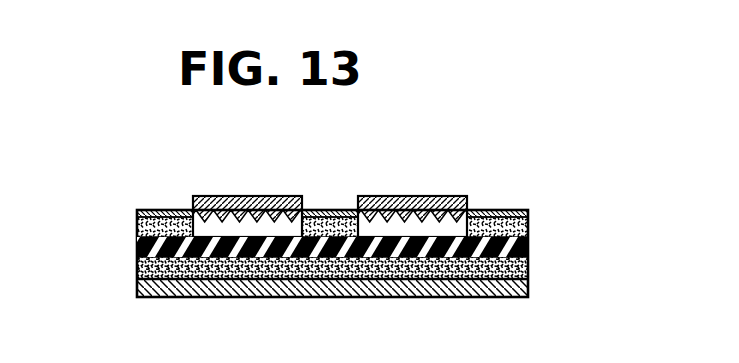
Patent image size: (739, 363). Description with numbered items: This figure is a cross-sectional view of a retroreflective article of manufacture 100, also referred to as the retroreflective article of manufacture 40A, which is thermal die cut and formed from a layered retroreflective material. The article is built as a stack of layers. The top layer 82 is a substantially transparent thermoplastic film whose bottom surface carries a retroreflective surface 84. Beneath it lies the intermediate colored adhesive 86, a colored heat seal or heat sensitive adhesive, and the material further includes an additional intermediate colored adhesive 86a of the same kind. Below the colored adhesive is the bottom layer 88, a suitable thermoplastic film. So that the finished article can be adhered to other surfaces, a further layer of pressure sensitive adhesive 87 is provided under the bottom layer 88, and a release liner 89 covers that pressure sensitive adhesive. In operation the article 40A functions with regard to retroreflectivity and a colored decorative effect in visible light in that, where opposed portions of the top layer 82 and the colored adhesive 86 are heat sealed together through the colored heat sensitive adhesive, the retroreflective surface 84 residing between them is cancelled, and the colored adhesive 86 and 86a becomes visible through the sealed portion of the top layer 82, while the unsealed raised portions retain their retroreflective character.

The top layer 82 is at (150, 210).
The retroreflective surface 84 is at (252, 220).
The intermediate colored adhesive 86 is at (137, 231).
The intermediate colored adhesive 86a is at (334, 211).
The pressure sensitive adhesive layer 87 is at (528, 267).
The bottom layer 88 is at (528, 245).
The release liner 89 is at (507, 288).
The retroreflective article of manufacture 100 is at (447, 176).
The retroreflective article of manufacture 40A is at (514, 180).